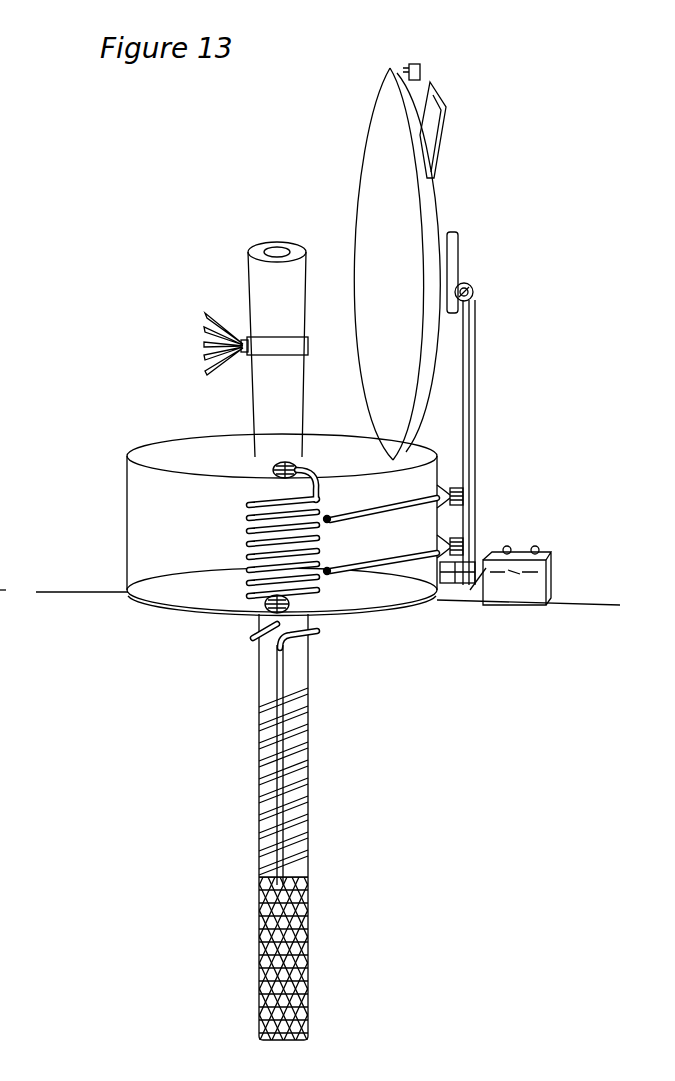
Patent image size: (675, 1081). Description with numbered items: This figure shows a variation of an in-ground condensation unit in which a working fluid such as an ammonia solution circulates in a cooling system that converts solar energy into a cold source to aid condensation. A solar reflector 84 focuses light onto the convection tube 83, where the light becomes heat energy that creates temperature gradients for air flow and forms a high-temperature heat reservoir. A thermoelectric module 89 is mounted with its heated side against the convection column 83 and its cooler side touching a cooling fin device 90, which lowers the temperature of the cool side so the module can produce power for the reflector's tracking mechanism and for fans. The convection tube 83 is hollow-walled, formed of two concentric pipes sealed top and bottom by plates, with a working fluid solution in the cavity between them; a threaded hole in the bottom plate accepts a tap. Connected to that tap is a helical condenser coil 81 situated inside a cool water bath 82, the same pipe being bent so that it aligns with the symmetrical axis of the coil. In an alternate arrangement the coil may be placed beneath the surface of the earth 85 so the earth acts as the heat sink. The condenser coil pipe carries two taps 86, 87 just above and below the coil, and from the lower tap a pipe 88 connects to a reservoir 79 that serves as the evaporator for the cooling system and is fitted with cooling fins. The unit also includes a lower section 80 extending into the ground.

The reservoir 79 is at (303, 981).
The riser pipe 80 is at (300, 737).
The helical condenser coil 81 is at (313, 590).
The cool water bath 82 is at (152, 484).
The convection tube 83 is at (250, 258).
The solar reflector 84 is at (385, 162).
The surface of the earth 85 is at (83, 592).
The tap 86 is at (272, 472).
The tap 87 is at (245, 612).
The pipe 88 is at (277, 668).
The thermoelectric module 89 is at (248, 358).
The cooling fin device 90 is at (200, 335).